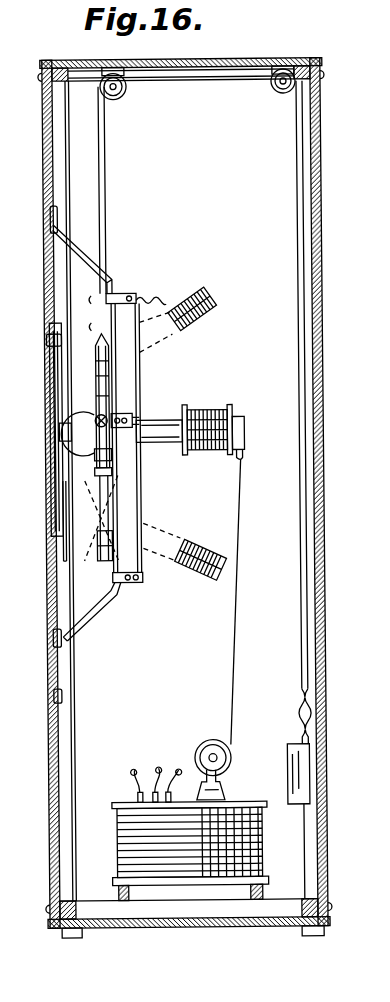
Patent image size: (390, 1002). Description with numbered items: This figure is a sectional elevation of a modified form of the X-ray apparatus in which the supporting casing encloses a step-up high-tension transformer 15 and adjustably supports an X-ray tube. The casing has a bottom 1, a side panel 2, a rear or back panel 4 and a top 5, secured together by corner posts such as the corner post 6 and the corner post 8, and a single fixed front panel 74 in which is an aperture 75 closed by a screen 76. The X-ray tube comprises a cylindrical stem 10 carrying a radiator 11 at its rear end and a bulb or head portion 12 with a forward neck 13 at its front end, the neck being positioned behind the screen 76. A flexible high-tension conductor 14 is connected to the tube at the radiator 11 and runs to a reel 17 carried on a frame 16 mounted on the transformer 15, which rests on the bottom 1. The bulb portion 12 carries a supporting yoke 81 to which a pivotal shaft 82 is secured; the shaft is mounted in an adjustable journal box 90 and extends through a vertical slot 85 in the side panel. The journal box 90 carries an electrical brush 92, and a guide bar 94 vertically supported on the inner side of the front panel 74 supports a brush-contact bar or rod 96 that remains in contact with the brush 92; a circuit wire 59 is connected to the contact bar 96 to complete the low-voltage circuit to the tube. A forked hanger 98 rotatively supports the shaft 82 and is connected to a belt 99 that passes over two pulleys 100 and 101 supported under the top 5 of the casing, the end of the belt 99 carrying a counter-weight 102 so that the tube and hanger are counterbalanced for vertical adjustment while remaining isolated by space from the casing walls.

The bottom 1 is at (188, 927).
The side panel 2 is at (230, 97).
The rear or back panel 4 is at (325, 212).
The top 5 is at (194, 59).
The corner post 6 is at (68, 165).
The corner post 8 is at (306, 824).
The cylindrical stem 10 is at (170, 420).
The radiator 11 is at (230, 412).
The bulb or head portion 12 is at (93, 461).
The forward neck 13 is at (62, 441).
The high-tension electrical circuit or conductor 14 is at (232, 646).
The step-up high-tension transformer 15 is at (114, 821).
The frame 16 is at (222, 792).
The reel 17 is at (202, 752).
The circuit wire 59 is at (168, 311).
The front panel 74 is at (47, 285).
The aperture 75 is at (48, 339).
The screen 76 is at (51, 386).
The supporting yoke 81 is at (106, 466).
The shaft 82 is at (95, 420).
The vertical slot 85 is at (105, 549).
The adjustable journal box 90 is at (69, 493).
The electrical brush 92 is at (140, 413).
The guide bar 94 is at (120, 556).
The brush-contact bar or rod 96 is at (142, 485).
The forked hanger 98 is at (100, 371).
The belt 99 is at (178, 79).
The pulley 100 is at (121, 100).
The pulley 101 is at (281, 95).
The counter-weight 102 is at (288, 757).